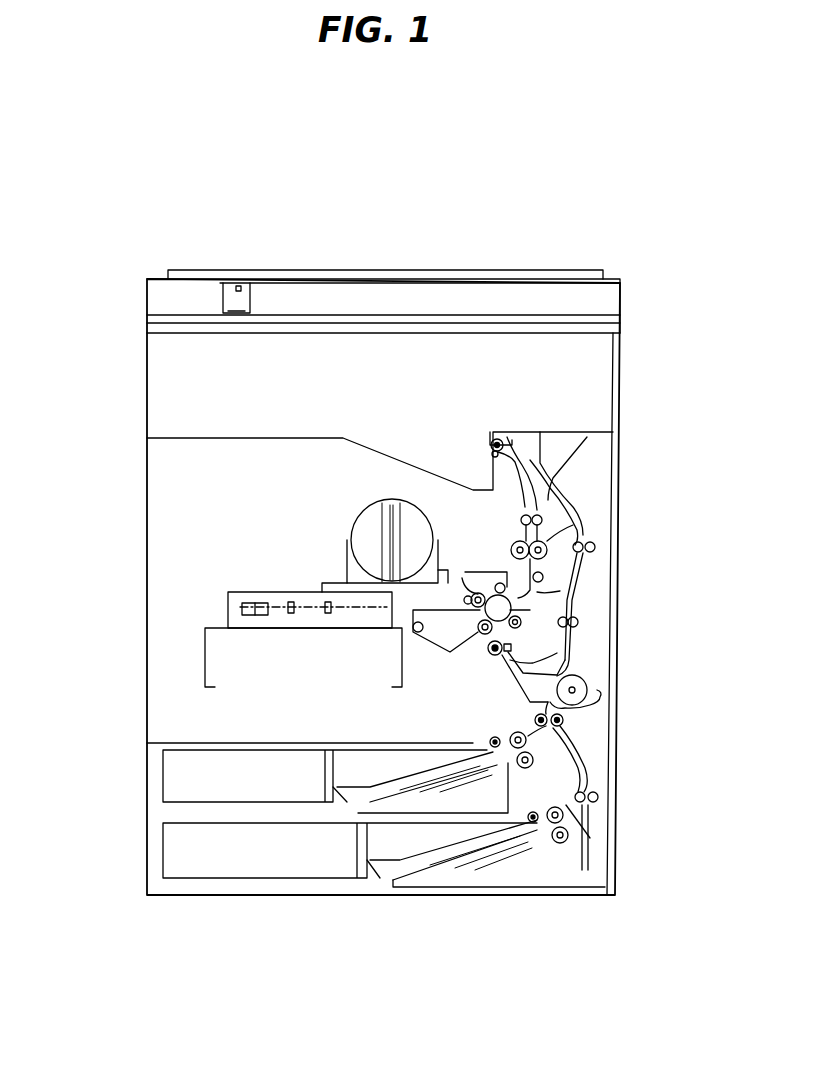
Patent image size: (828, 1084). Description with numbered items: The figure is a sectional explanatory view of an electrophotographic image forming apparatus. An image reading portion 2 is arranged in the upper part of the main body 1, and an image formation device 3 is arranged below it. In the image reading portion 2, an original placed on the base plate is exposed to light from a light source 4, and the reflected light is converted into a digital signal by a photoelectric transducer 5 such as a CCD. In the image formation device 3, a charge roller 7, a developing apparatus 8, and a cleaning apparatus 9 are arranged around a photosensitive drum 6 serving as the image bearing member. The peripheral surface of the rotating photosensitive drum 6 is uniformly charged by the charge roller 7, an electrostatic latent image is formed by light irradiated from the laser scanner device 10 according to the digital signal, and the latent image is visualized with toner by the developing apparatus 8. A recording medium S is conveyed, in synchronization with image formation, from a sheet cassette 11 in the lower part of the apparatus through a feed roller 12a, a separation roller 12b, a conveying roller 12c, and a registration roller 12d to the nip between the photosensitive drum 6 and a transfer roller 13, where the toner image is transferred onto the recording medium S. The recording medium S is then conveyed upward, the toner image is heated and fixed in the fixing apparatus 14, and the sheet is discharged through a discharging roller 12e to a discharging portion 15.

The main body 1 is at (483, 270).
The image reading portion 2 is at (622, 310).
The image formation device 3 is at (147, 668).
The light source 4 is at (240, 288).
The photoelectric transducer 5 is at (228, 311).
The photosensitive drum 6 is at (560, 591).
The charge roller 7 is at (467, 577).
The developing apparatus 8 is at (511, 646).
The cleaning apparatus 9 is at (494, 584).
The laser scanner device 10 is at (228, 612).
The sheet cassette 11 is at (163, 780).
The feed roller 12a is at (490, 742).
The separation roller 12b is at (514, 733).
The conveying roller 12c is at (562, 722).
The registration roller 12d is at (602, 700).
The discharging roller 12e is at (500, 440).
The transfer roller 13 is at (520, 623).
The fixing apparatus 14 is at (588, 528).
The discharging portion 15 is at (393, 458).
The recording medium S is at (382, 766).